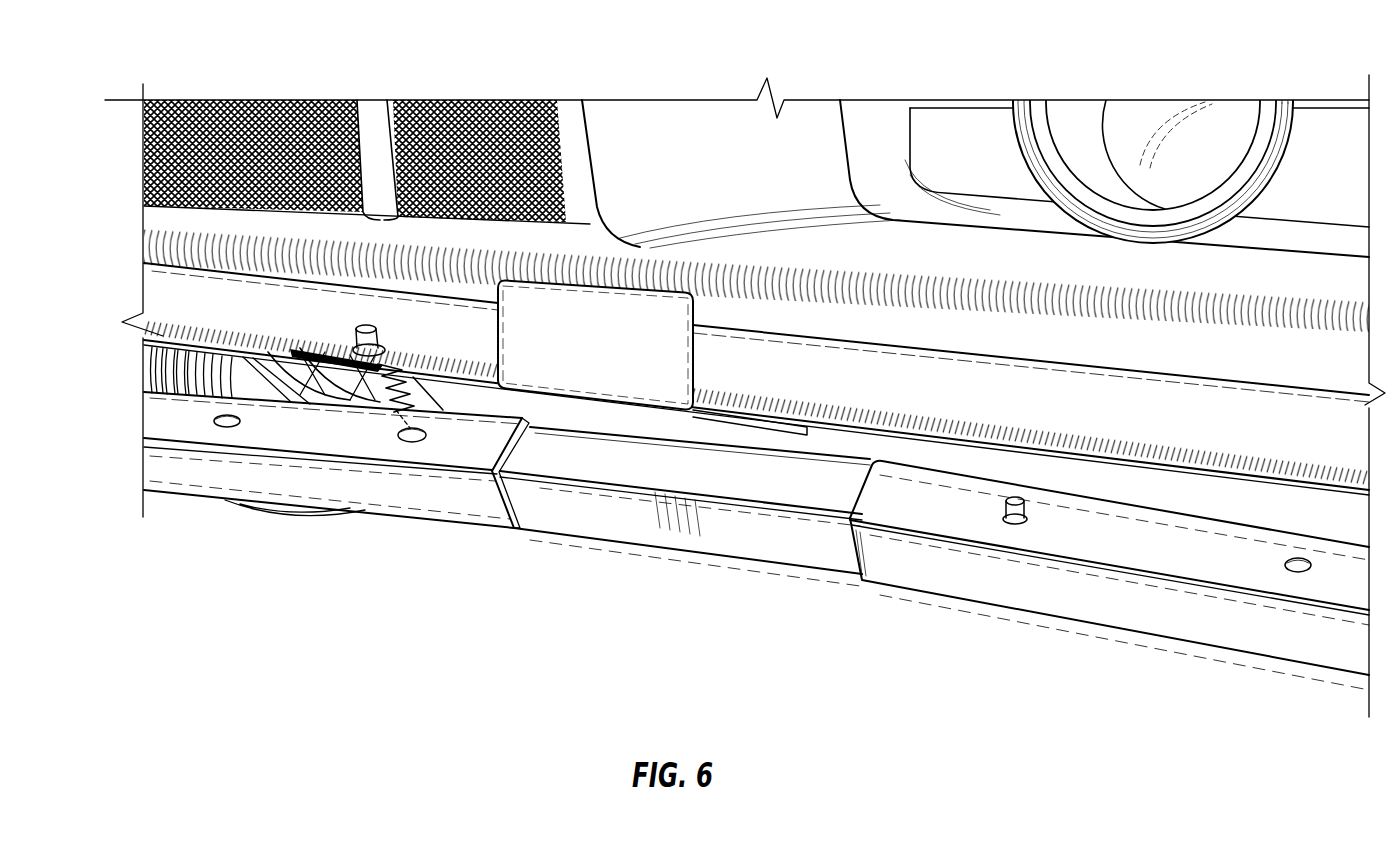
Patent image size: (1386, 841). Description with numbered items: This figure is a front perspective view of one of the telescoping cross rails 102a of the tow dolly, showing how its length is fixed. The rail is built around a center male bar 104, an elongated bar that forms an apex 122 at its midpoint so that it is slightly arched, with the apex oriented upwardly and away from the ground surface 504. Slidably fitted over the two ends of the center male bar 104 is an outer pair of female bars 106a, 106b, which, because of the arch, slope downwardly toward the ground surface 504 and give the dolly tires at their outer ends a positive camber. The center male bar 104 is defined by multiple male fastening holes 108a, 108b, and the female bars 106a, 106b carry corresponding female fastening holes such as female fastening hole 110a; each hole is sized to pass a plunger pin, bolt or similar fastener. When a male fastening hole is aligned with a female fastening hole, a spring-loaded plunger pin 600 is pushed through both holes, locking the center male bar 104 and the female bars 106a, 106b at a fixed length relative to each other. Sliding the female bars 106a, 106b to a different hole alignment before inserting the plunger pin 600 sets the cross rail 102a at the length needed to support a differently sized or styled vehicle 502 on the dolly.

The cross rail 102a is at (480, 681).
The center male bar 104 is at (616, 547).
The female bar 106a is at (482, 544).
The female bar 106b is at (928, 606).
The first male fastening hole 108a is at (226, 428).
The second male fastening hole 108b is at (400, 433).
The female fastening hole 110a is at (413, 443).
The apex 122 is at (692, 441).
The vehicle 502 is at (622, 349).
The ground surface 504 is at (733, 646).
The plunger pin 600 is at (351, 342).